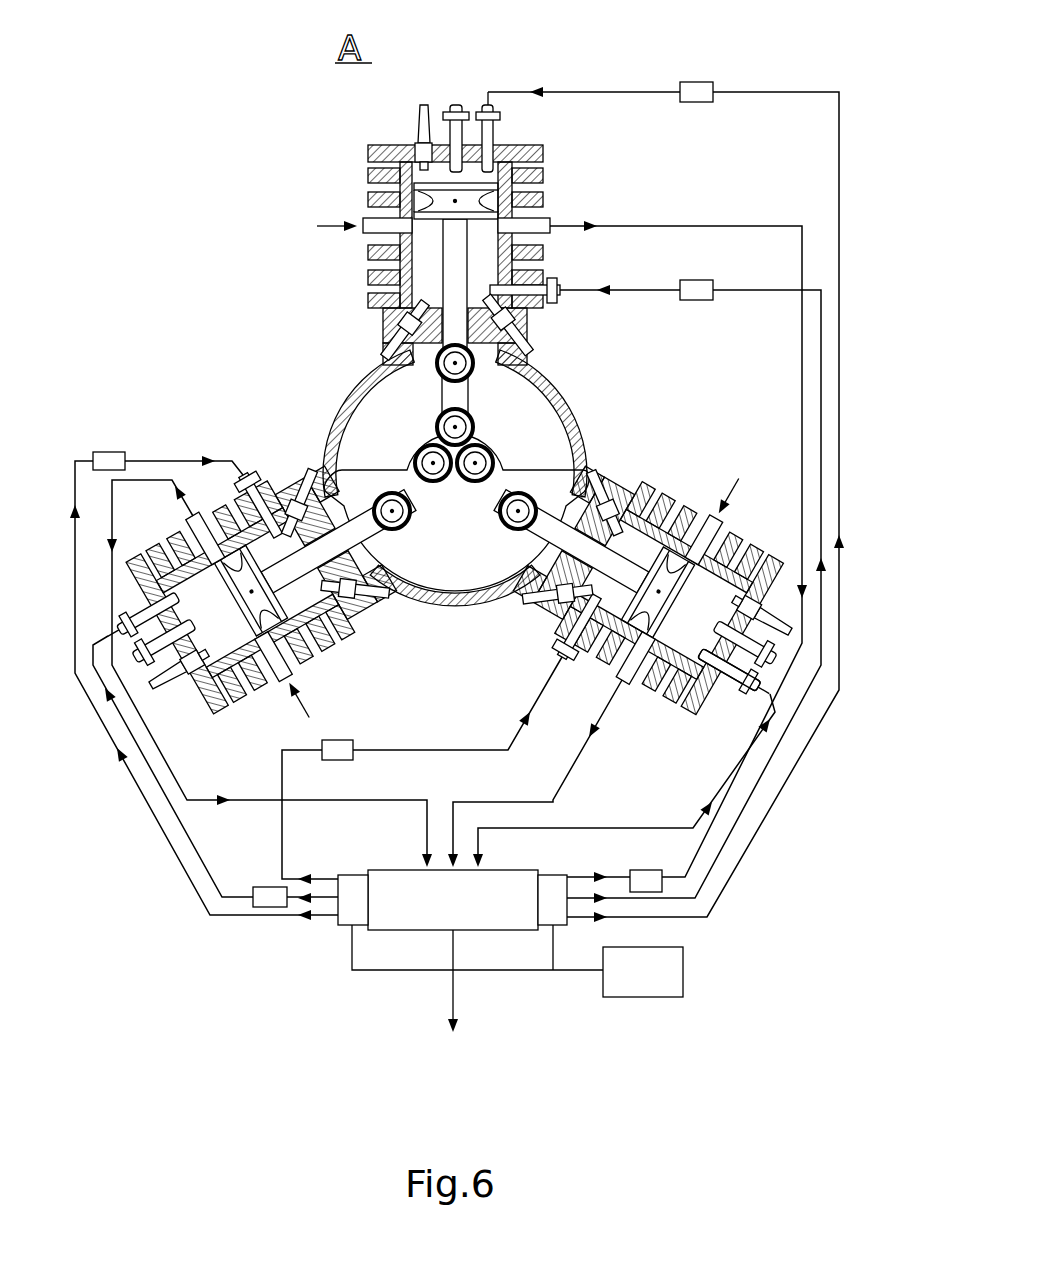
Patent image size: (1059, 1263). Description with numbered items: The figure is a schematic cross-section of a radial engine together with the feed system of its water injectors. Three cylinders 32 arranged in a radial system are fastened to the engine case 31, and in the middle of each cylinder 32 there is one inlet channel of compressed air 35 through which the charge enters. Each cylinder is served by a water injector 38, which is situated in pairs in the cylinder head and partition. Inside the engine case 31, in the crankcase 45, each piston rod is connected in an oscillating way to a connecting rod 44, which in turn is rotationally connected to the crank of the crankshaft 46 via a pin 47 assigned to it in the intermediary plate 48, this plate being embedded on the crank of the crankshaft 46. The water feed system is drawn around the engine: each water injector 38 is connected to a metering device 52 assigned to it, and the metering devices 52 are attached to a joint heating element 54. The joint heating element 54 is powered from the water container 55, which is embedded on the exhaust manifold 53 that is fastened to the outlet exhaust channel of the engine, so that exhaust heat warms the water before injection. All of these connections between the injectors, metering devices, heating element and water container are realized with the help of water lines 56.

The engine case 31 is at (327, 453).
The cylinder 32 is at (370, 172).
The inlet channel of compressed air 35 is at (437, 470).
The water injector 38 is at (743, 691).
The connecting rod 44 is at (410, 480).
The crankcase 45 is at (397, 393).
The crankshaft 46 is at (413, 443).
The pin 47 is at (477, 470).
The intermediary plate 48 is at (420, 433).
The metering device 52 is at (700, 90).
The exhaust manifold 53 is at (420, 915).
The joint heating element 54 is at (357, 908).
The water container 55 is at (660, 982).
The water lines 56 is at (152, 813).